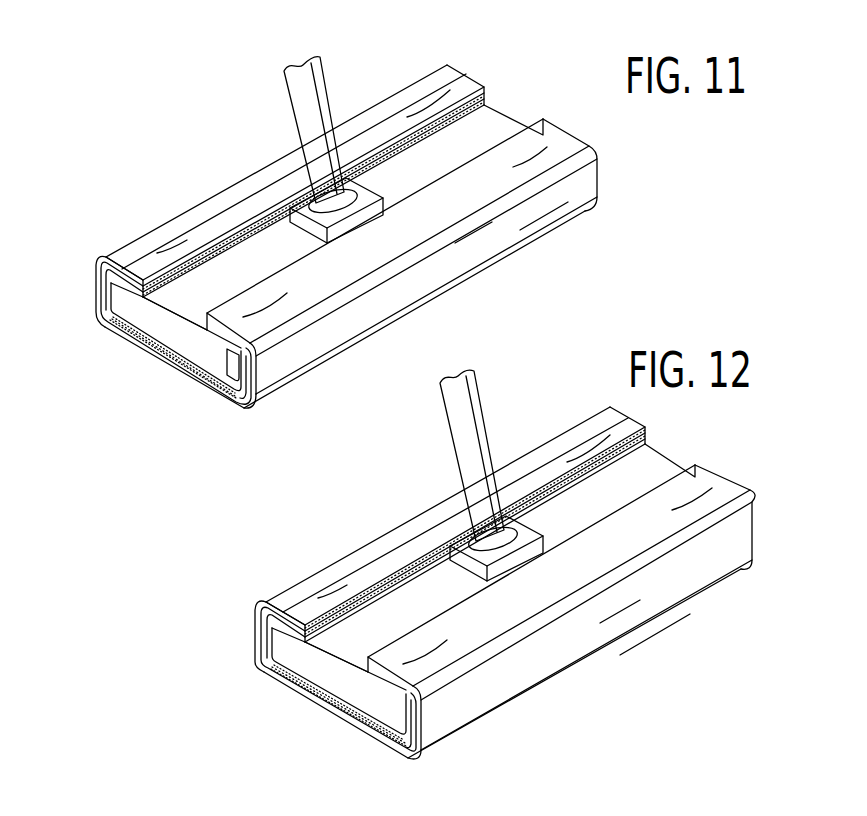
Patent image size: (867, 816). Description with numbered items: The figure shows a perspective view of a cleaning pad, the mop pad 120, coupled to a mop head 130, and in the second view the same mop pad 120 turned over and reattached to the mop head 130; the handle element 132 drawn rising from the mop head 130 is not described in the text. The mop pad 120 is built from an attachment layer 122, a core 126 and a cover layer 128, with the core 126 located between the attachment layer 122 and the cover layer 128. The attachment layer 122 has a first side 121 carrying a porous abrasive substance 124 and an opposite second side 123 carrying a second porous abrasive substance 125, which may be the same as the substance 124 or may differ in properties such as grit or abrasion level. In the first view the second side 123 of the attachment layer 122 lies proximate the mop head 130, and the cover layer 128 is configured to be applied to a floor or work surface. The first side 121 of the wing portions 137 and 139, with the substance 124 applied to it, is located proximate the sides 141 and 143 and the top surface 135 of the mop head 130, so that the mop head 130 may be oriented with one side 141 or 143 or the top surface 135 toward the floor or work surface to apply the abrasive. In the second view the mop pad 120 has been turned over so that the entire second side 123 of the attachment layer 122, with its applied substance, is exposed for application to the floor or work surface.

In FIG. 11, the mop pad 120 is at (462, 83).
In FIG. 12, the mop pad 120 is at (727, 483).
In FIG. 11, the first side 121 is at (135, 263).
In FIG. 12, the first side 121 is at (262, 623).
In FIG. 11, the attachment layer 122 is at (178, 368).
In FIG. 12, the attachment layer 122 is at (350, 714).
In FIG. 11, the second side 123 is at (97, 288).
In FIG. 12, the second side 123 is at (297, 598).
In FIG. 11, the substance 124 is at (560, 140).
In FIG. 12, the substance 124 is at (450, 723).
In FIG. 11, the second porous abrasive substance 125 is at (247, 372).
In FIG. 12, the second porous abrasive substance 125 is at (547, 670).
In FIG. 11, the core 126 is at (113, 333).
In FIG. 12, the core 126 is at (280, 665).
In FIG. 11, the cover layer 128 is at (217, 407).
In FIG. 12, the cover layer 128 is at (375, 737).
In FIG. 11, the mop head 130 is at (232, 272).
In FIG. 12, the mop head 130 is at (395, 610).
In FIG. 11, the post 132 is at (310, 83).
In FIG. 12, the post 132 is at (470, 408).
In FIG. 11, the top surface 135 is at (503, 127).
In FIG. 11, the wing portion 137 is at (275, 175).
In FIG. 11, the wing portion 139 is at (483, 187).
In FIG. 11, the side 141 is at (250, 367).
In FIG. 11, the side 143 is at (130, 287).